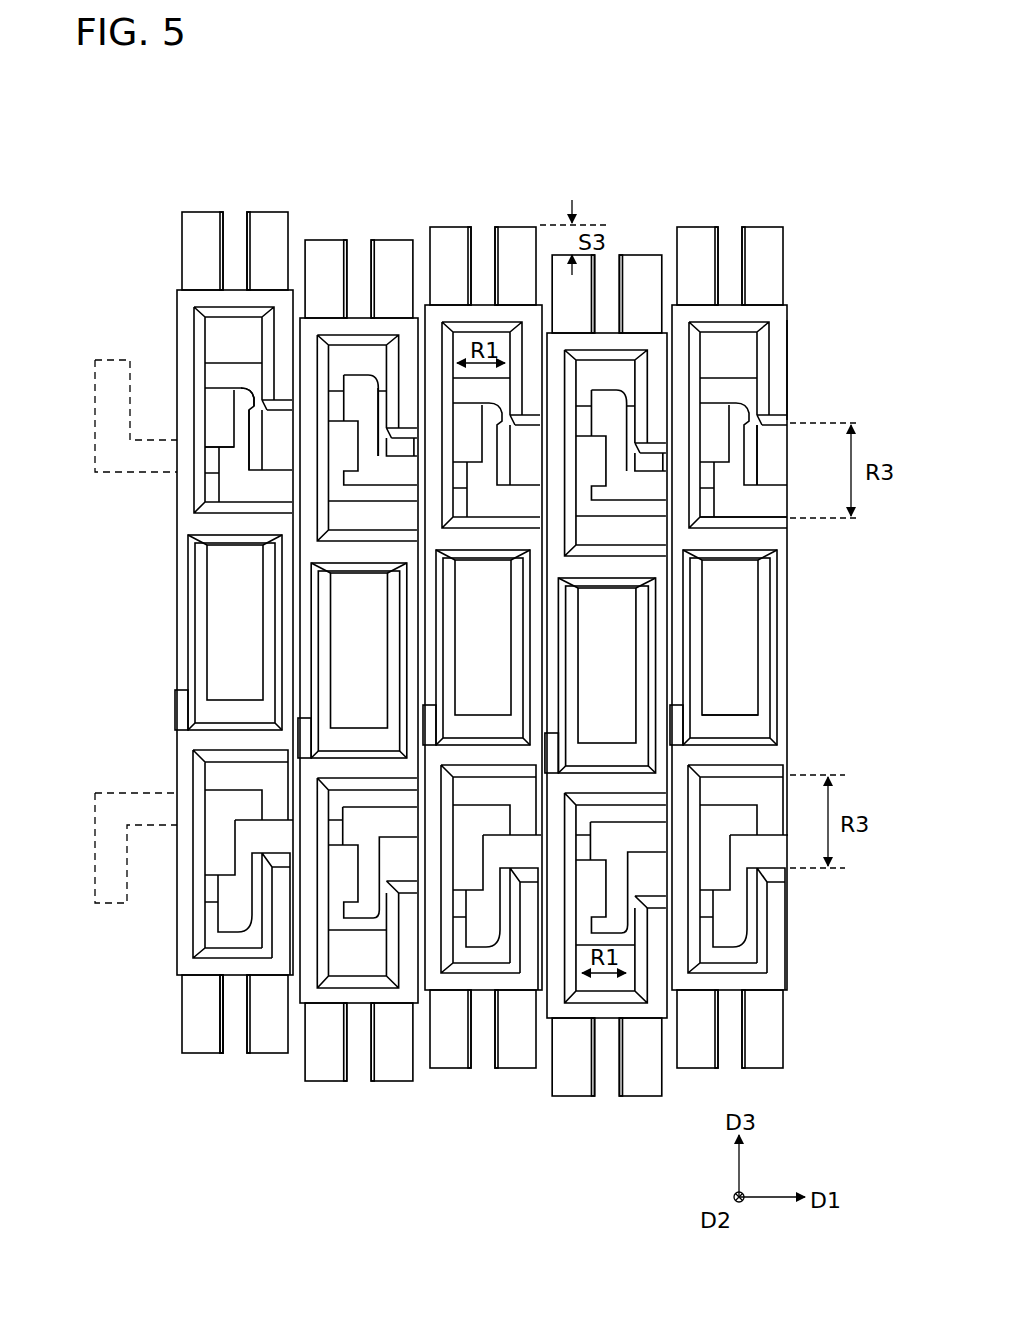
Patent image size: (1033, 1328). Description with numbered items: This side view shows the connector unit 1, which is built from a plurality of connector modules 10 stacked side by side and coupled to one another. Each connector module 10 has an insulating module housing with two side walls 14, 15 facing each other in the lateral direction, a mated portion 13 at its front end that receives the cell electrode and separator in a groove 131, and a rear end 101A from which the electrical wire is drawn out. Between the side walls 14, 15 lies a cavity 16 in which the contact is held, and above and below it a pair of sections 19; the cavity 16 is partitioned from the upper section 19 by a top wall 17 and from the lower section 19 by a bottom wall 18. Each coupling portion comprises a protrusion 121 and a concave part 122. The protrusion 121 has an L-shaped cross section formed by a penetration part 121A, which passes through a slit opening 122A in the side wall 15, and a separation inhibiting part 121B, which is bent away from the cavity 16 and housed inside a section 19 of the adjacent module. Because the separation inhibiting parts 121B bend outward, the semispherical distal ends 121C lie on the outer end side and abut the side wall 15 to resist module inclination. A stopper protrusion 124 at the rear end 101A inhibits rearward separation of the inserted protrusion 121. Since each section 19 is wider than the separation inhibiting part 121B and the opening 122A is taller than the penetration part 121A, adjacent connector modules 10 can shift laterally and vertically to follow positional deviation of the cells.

The connector unit 1 is at (767, 158).
The connector module 10 is at (259, 212).
The mated portion 13 is at (193, 1057).
The groove 131 is at (235, 1035).
The side wall 14 is at (177, 600).
The side wall 15 is at (293, 353).
The cavity 16 is at (250, 642).
The top wall 17 is at (720, 571).
The bottom wall 18 is at (727, 723).
The section 19 is at (754, 407).
The rear end 101A is at (789, 340).
The protrusion 121 is at (268, 403).
The penetration part 121A is at (143, 442).
The separation inhibiting part 121B is at (93, 425).
The distal end 121C is at (272, 431).
The concave part 122 is at (745, 506).
The opening 122A is at (772, 448).
The stopper protrusion 124 is at (213, 440).